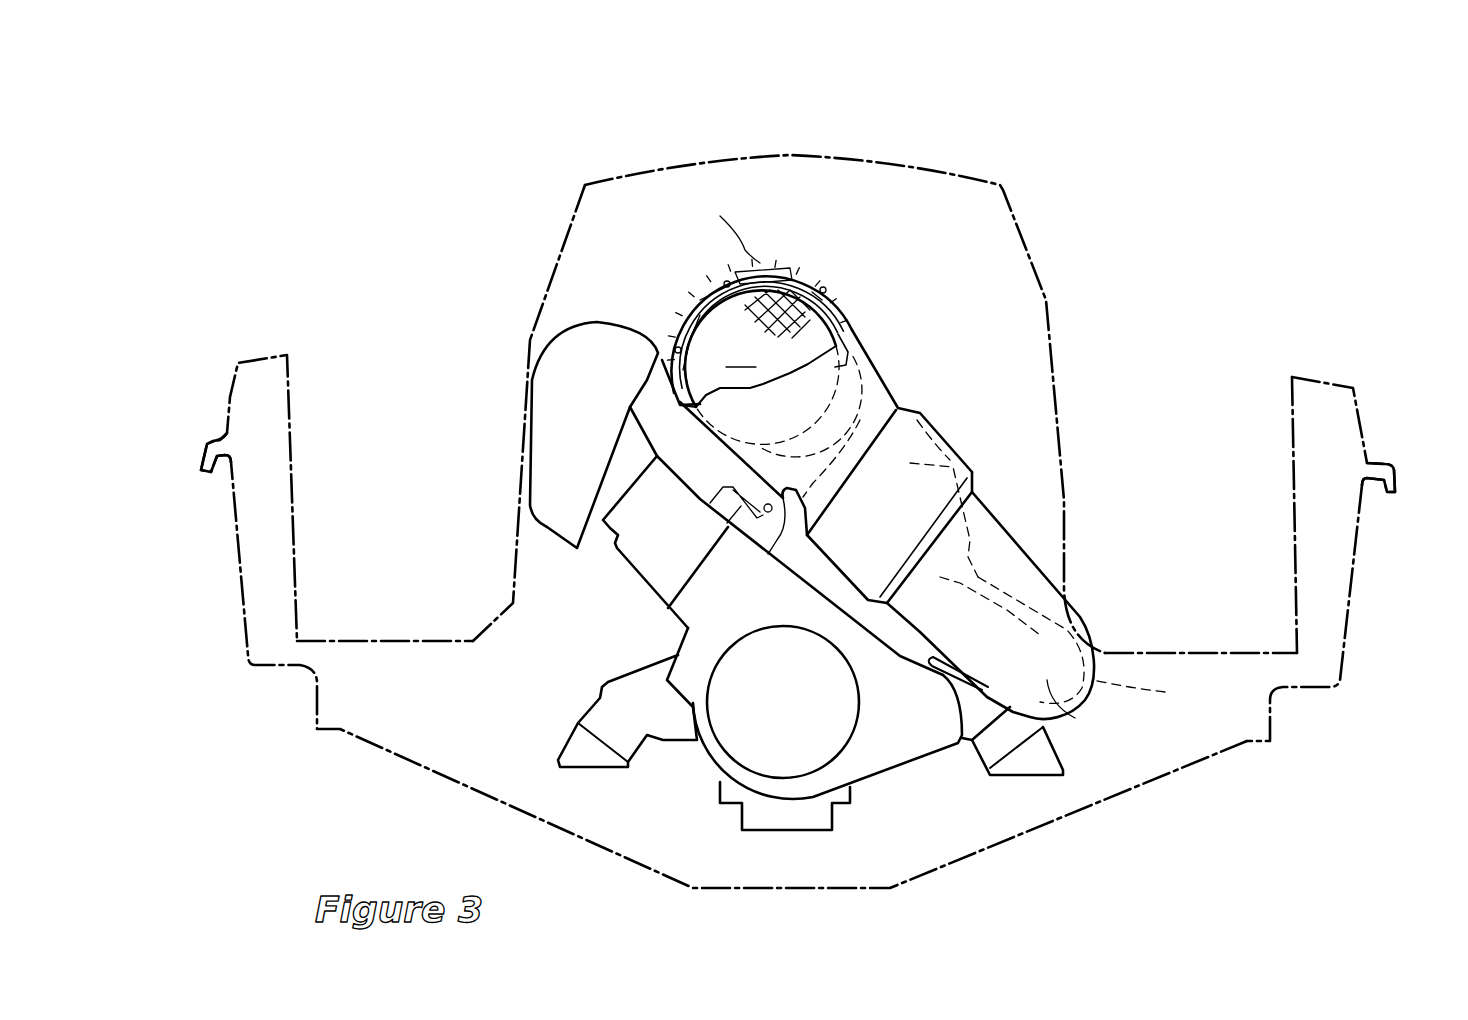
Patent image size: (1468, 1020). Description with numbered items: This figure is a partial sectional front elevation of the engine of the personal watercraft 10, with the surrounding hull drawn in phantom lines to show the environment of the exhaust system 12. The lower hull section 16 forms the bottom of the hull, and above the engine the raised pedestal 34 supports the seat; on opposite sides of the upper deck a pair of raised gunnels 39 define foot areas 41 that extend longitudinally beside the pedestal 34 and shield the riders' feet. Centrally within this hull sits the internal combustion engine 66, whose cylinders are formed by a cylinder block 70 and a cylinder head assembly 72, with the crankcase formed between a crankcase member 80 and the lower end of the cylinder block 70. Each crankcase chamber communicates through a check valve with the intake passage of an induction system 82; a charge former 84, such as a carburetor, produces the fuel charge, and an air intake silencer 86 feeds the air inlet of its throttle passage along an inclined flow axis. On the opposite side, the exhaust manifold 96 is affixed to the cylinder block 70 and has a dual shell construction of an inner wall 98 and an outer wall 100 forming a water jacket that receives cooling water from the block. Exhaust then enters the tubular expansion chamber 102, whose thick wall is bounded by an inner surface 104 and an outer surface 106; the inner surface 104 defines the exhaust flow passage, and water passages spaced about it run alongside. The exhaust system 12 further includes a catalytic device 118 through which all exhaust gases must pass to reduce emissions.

The personal watercraft 10 is at (1145, 148).
The exhaust system 12 is at (1013, 533).
The lower hull section 16 is at (1198, 762).
The raised pedestal 34 is at (1057, 353).
The raised gunnels 39 is at (203, 447).
The foot areas 41 is at (408, 640).
The internal combustion engine 66 is at (863, 783).
The cylinder block 70 is at (883, 620).
The cylinder head assembly 72 is at (953, 460).
The crankcase member 80 is at (882, 753).
The induction system 82 is at (627, 568).
The charge former 84 is at (655, 578).
The air intake silencer 86 is at (553, 438).
The exhaust manifold 96 is at (1075, 718).
The inner wall 98 is at (1053, 627).
The outer wall 100 is at (1008, 593).
The expansion chamber 102 is at (890, 385).
The inner surface 104 is at (840, 330).
The outer surface 106 is at (786, 262).
The catalytic device 118 is at (722, 335).